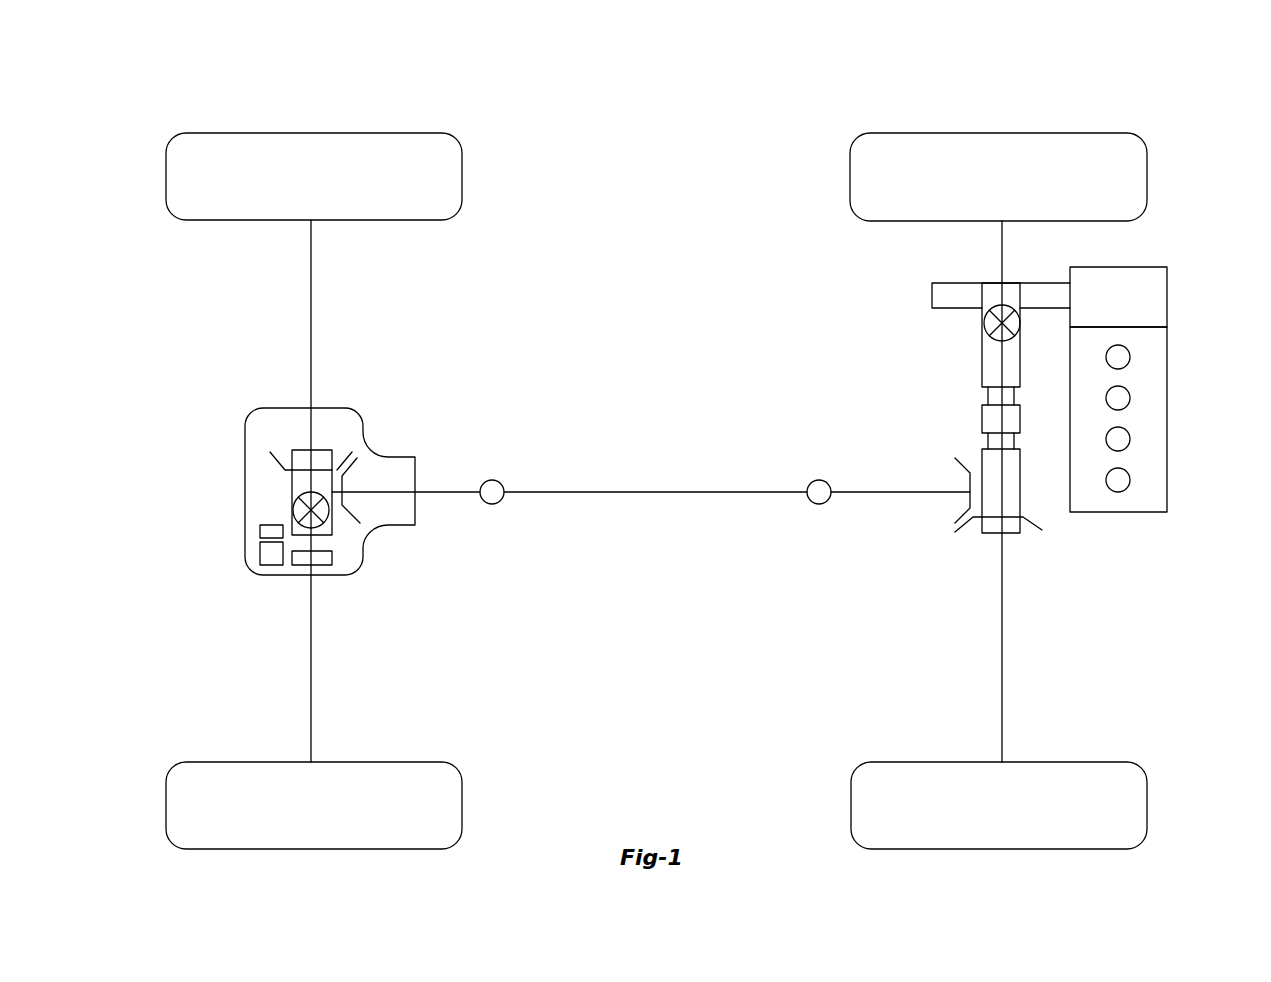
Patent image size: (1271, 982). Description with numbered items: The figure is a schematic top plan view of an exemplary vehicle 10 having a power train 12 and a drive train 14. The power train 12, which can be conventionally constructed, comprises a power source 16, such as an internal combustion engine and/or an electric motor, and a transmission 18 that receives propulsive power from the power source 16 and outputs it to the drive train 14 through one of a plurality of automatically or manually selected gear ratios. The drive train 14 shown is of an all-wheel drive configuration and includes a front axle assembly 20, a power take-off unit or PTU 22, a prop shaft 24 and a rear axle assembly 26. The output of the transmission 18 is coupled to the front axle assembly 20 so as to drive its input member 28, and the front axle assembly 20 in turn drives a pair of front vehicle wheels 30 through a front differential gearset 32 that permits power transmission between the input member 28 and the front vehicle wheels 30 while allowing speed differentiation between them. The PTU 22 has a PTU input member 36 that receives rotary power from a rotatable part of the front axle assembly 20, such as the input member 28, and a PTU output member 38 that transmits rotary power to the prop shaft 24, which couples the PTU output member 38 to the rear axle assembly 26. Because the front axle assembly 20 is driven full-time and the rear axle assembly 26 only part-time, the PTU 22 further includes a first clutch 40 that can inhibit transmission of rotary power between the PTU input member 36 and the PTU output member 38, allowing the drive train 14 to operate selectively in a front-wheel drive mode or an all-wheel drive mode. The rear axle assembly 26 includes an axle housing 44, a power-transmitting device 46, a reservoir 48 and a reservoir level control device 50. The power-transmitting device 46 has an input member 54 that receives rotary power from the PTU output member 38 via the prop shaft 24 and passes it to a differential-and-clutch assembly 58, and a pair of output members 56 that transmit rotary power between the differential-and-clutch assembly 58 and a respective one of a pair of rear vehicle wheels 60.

The vehicle 10 is at (1152, 84).
The power train 12 is at (1170, 387).
The drive train 14 is at (636, 440).
The power source 16 is at (1153, 438).
The transmission 18 is at (1157, 288).
The front axle assembly 20 is at (964, 347).
The power take-off unit (PTU) 22 is at (957, 545).
The prop shaft 24 is at (608, 492).
The rear axle assembly 26 is at (326, 520).
The input member 28 is at (977, 298).
The front vehicle wheels 30 is at (913, 145).
The front differential gearset 32 is at (990, 333).
The PTU input member 36 is at (982, 370).
The PTU output member 38 is at (912, 490).
The first clutch 40 is at (993, 417).
The axle housing 44 is at (245, 565).
The power-transmitting device 46 is at (272, 478).
The reservoir 48 is at (267, 550).
The reservoir level control device 50 is at (267, 530).
The input member 54 is at (393, 490).
The output members 56 is at (311, 286).
The differential-and-clutch assembly 58 is at (322, 515).
The rear vehicle wheels 60 is at (405, 137).